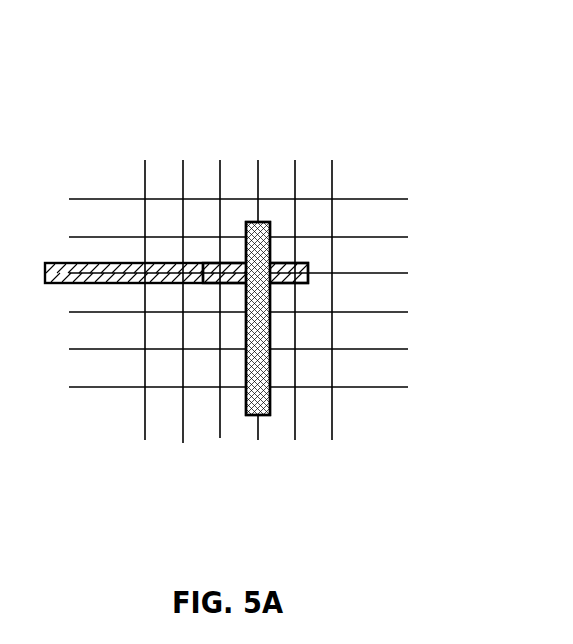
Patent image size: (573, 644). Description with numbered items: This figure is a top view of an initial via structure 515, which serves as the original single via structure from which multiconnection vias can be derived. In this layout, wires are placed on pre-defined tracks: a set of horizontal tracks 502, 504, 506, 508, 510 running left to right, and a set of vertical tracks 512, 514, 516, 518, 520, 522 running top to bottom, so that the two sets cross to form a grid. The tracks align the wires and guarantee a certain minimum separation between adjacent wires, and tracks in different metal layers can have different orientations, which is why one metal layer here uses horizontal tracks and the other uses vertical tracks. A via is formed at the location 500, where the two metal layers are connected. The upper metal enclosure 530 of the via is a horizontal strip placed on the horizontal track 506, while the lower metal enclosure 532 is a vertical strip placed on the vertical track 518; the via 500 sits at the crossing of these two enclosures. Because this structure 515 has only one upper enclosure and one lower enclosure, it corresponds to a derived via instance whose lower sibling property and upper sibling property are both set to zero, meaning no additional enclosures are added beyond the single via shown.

The original single via structure 515 is at (128, 63).
The via 500 is at (245, 267).
The horizontal track 502 is at (408, 199).
The horizontal track 504 is at (408, 237).
The horizontal track 506 is at (408, 273).
The horizontal track 508 is at (408, 312).
The horizontal track 510 is at (408, 349).
The vertical track 512 is at (146, 440).
The vertical track 514 is at (183, 420).
The vertical track 516 is at (220, 437).
The vertical track 518 is at (258, 418).
The vertical track 520 is at (295, 398).
The vertical track 522 is at (332, 368).
The upper metal enclosure 530 is at (308, 268).
The lower metal enclosure 532 is at (258, 233).